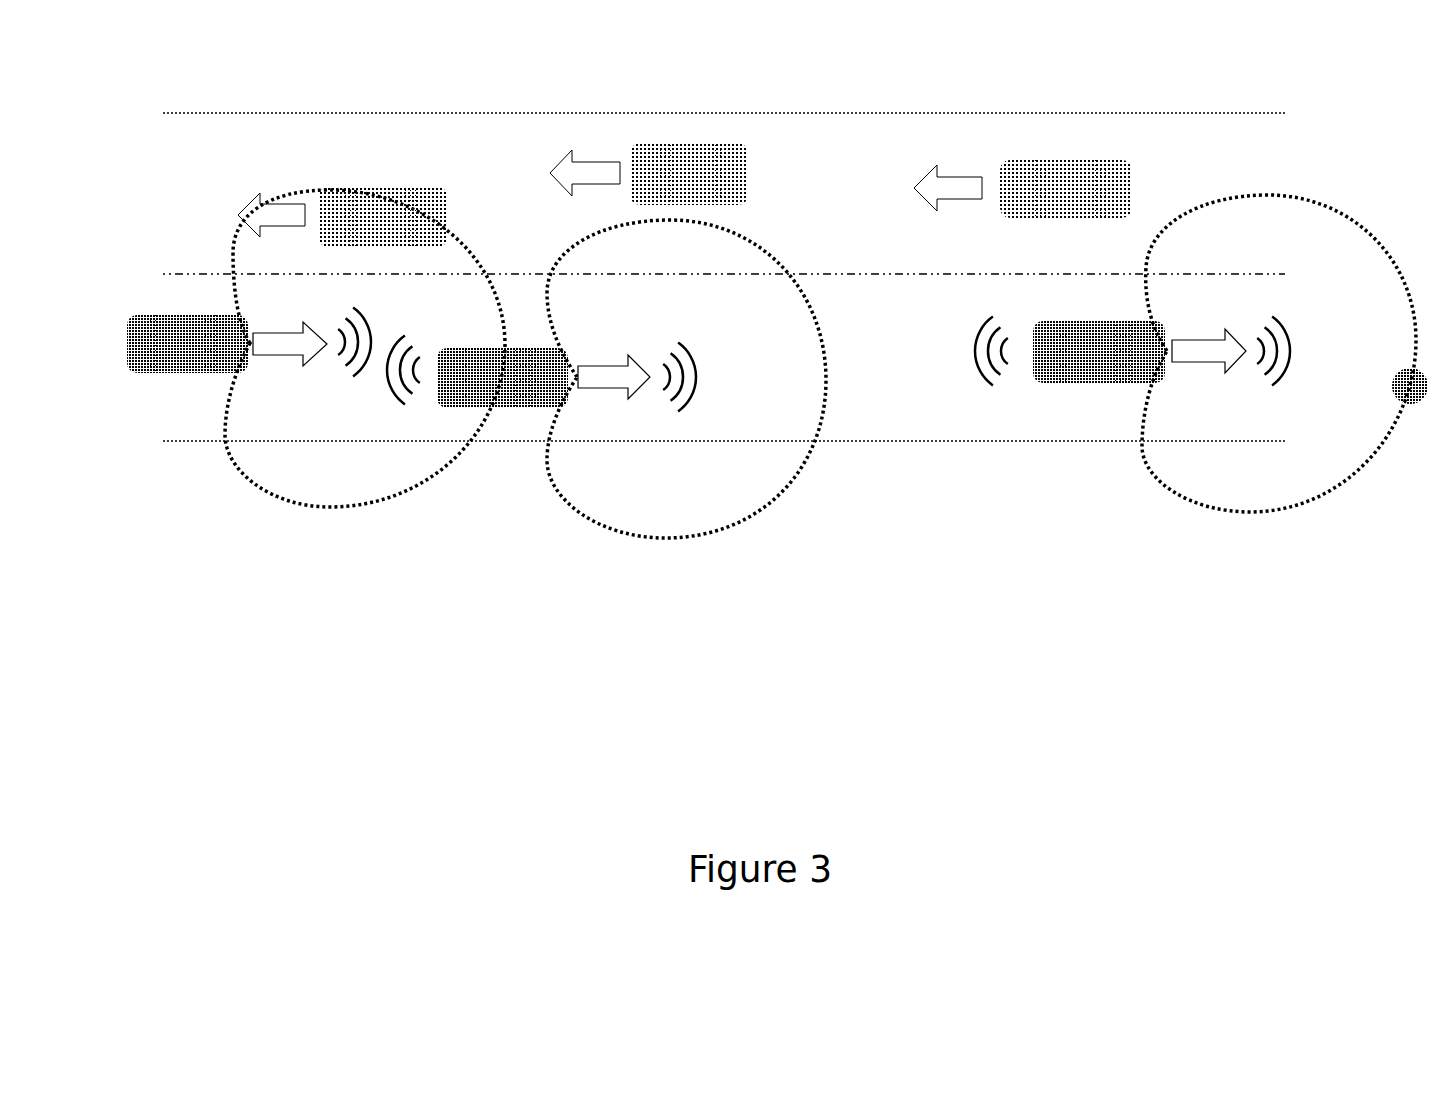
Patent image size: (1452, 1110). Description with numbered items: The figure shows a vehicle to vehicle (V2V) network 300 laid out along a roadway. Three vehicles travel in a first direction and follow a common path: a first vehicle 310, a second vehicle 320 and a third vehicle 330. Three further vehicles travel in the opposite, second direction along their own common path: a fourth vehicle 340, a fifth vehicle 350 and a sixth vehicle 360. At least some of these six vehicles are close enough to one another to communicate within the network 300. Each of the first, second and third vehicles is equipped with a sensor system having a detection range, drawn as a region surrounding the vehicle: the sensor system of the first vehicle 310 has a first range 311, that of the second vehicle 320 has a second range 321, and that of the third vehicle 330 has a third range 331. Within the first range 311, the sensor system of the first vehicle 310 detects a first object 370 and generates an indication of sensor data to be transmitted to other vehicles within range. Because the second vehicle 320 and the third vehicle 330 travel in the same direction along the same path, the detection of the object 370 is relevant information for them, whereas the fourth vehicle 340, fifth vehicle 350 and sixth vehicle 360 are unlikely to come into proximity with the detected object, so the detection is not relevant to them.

The vehicle to vehicle network 300 is at (982, 623).
The first vehicle 310 is at (1082, 393).
The first range 311 is at (1232, 502).
The second vehicle 320 is at (512, 398).
The second range 321 is at (675, 538).
The third vehicle 330 is at (185, 371).
The third range 331 is at (337, 502).
The fourth vehicle 340 is at (1080, 147).
The fifth vehicle 350 is at (693, 135).
The sixth vehicle 360 is at (382, 173).
The first object 370 is at (1415, 400).